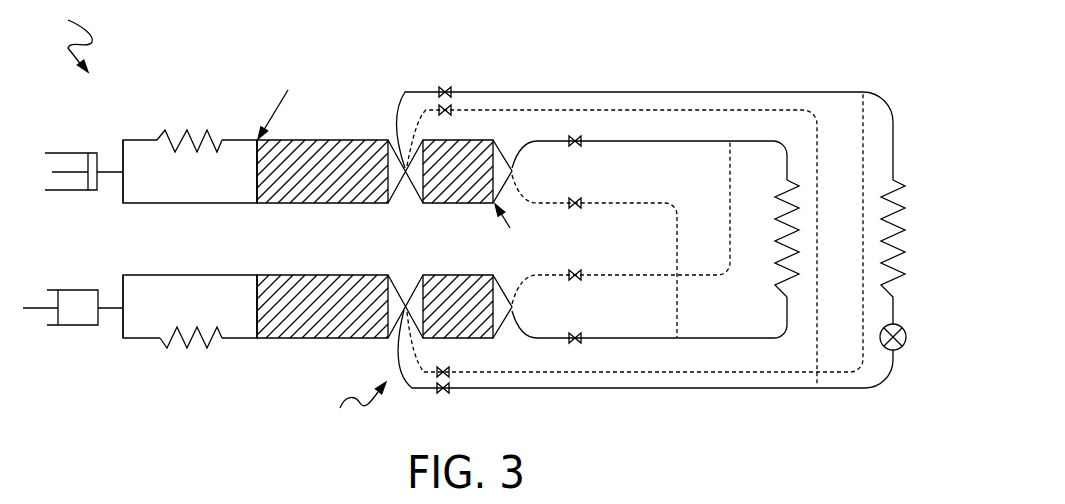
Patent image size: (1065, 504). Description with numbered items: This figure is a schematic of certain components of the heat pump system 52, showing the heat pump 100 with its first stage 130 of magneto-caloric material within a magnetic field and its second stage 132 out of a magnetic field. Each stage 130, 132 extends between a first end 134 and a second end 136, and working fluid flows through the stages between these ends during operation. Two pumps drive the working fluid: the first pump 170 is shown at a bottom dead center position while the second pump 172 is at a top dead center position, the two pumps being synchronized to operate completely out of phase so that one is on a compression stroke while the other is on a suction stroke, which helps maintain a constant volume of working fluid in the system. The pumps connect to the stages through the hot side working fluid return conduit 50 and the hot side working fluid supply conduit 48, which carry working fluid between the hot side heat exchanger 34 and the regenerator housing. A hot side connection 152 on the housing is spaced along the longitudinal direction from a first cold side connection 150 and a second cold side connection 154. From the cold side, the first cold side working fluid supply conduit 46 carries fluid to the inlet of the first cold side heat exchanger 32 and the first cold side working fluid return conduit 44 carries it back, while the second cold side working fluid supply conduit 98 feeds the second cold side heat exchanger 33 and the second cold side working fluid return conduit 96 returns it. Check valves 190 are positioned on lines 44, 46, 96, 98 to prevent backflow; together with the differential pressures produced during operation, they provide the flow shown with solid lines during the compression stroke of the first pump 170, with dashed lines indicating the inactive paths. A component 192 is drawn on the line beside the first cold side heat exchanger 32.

The heat pump system 52 is at (68, 36).
The first pump 170 is at (78, 153).
The second pump 172 is at (83, 290).
The hot side working fluid return conduit 50 is at (137, 140).
The hot side heat exchanger 34 is at (190, 132).
The hot side working fluid supply conduit 48 is at (195, 203).
The hot side connection 152 is at (257, 172).
The first stage 130 is at (322, 183).
The second end 136 is at (282, 102).
The second stage 132 is at (460, 295).
The first cold side connection 150 is at (393, 172).
The first end 134 is at (512, 197).
The second cold side connection 154 is at (515, 178).
The first cold side working fluid supply conduit 46 is at (672, 92).
The first cold side working fluid return conduit 44 is at (817, 156).
The first cold side heat exchanger 32 is at (900, 300).
The sensor 192 is at (900, 350).
The second cold side heat exchanger 33 is at (777, 225).
The second cold side working fluid supply conduit 98 is at (652, 141).
The second cold side working fluid return conduit 96 is at (640, 203).
The check valve 190 is at (448, 90).
The heat pump 100 is at (351, 409).